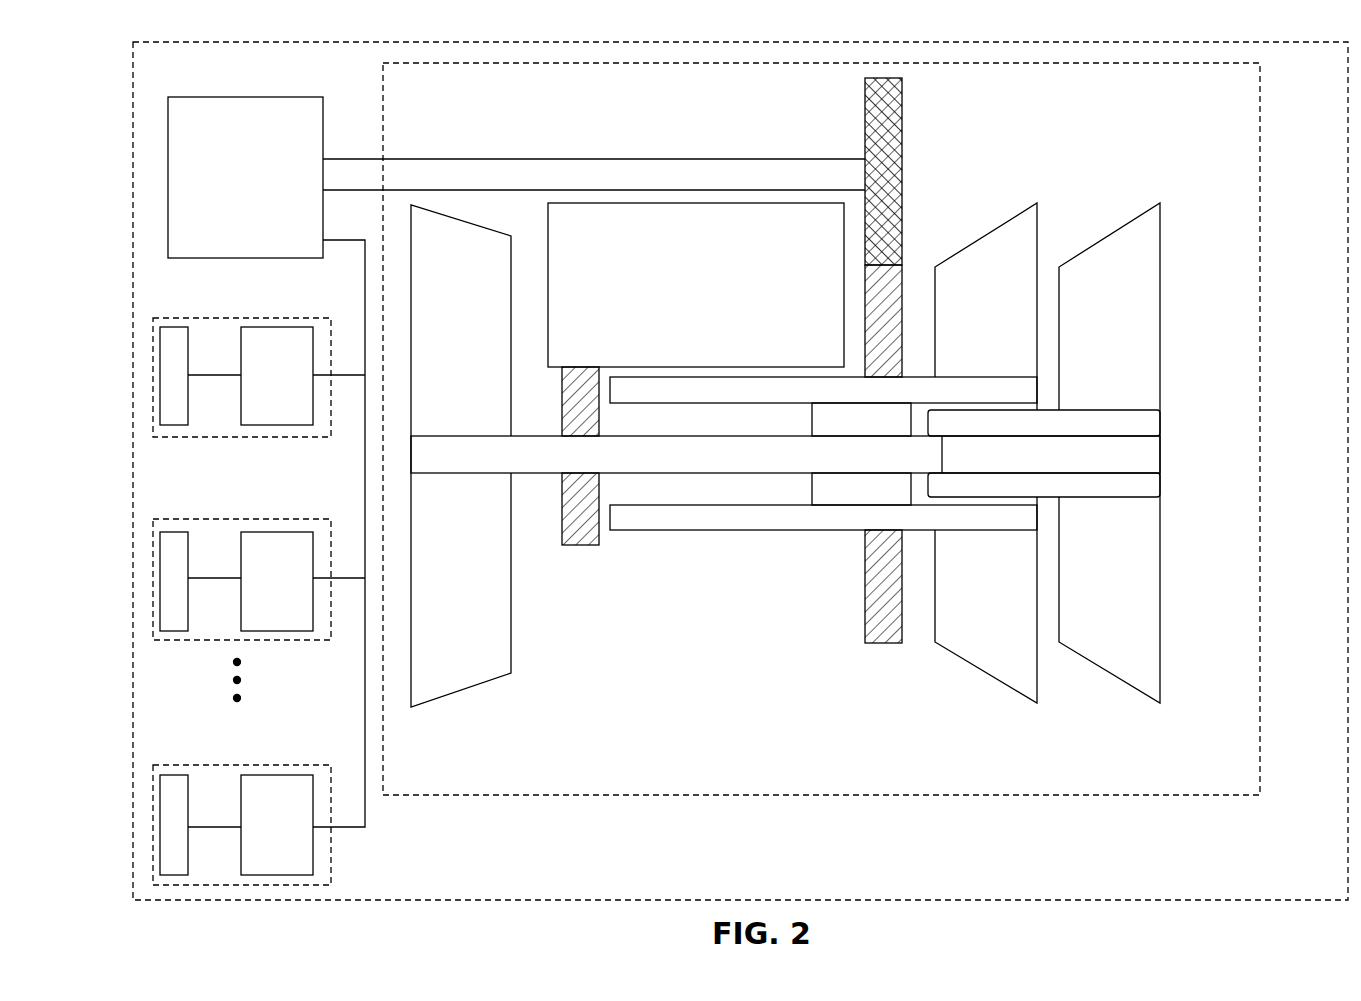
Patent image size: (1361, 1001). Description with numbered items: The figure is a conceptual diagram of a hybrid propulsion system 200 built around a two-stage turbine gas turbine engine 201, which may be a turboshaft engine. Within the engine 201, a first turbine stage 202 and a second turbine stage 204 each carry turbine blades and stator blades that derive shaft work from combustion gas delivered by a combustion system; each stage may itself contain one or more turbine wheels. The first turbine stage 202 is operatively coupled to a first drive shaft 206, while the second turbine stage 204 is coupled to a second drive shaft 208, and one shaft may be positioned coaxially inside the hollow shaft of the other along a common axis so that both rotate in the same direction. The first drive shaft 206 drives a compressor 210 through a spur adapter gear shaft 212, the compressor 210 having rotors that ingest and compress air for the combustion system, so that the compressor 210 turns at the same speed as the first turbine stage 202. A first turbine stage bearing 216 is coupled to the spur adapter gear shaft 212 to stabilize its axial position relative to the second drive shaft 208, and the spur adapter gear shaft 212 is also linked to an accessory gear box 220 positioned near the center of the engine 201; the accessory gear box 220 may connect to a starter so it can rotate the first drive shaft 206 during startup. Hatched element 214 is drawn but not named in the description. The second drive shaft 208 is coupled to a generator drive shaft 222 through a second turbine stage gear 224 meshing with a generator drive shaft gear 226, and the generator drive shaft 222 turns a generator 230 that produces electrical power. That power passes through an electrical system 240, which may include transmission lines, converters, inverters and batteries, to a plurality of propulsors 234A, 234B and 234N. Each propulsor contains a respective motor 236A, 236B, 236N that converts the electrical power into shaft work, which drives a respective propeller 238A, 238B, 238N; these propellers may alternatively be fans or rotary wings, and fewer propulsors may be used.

The hybrid propulsion system 200 is at (1303, 75).
The gas turbine engine 201 is at (1228, 182).
The first turbine stage 202 is at (1109, 453).
The second turbine stage 204 is at (986, 453).
The first drive shaft 206 is at (1044, 453).
The second drive shaft 208 is at (823, 453).
The compressor 210 is at (461, 456).
The spur adapter gear shaft 212 is at (785, 454).
The bearing 214 is at (572, 547).
The first turbine stage bearing 216 is at (861, 454).
The accessory gear box 220 is at (696, 285).
The generator drive shaft 222 is at (594, 175).
The second turbine stage gear 224 is at (900, 300).
The generator drive shaft gear 226 is at (902, 132).
The generator 230 is at (245, 177).
The propulsor 234A is at (200, 318).
The propulsor 234B is at (170, 520).
The propulsor 234N is at (175, 765).
The motor 236A is at (277, 376).
The motor 236B is at (277, 581).
The motor 236N is at (277, 825).
The propeller 238A is at (170, 378).
The propeller 238B is at (170, 580).
The propeller 238N is at (170, 830).
The electrical system 240 is at (363, 290).